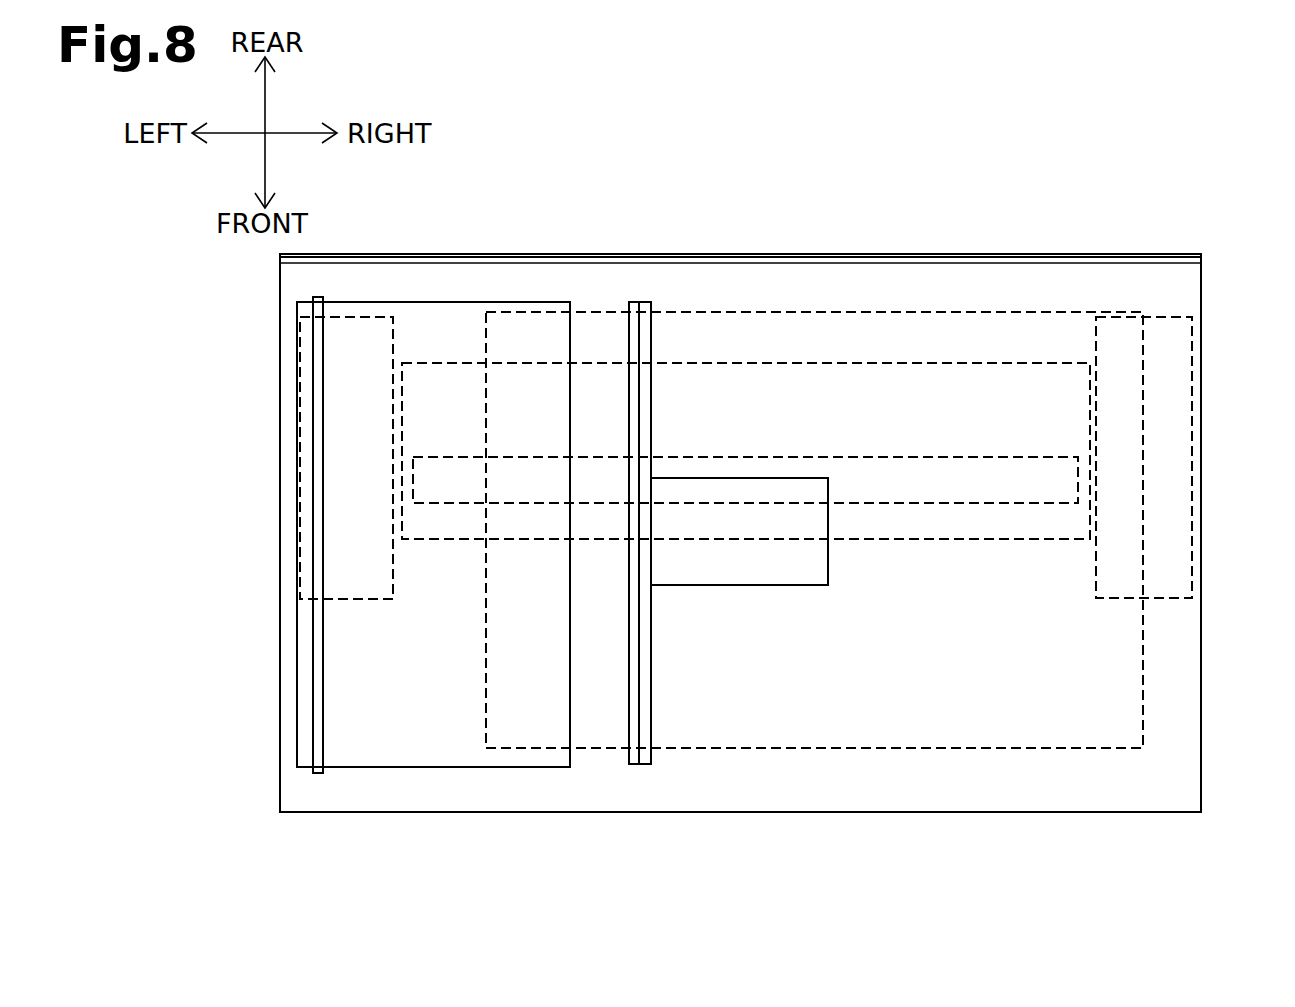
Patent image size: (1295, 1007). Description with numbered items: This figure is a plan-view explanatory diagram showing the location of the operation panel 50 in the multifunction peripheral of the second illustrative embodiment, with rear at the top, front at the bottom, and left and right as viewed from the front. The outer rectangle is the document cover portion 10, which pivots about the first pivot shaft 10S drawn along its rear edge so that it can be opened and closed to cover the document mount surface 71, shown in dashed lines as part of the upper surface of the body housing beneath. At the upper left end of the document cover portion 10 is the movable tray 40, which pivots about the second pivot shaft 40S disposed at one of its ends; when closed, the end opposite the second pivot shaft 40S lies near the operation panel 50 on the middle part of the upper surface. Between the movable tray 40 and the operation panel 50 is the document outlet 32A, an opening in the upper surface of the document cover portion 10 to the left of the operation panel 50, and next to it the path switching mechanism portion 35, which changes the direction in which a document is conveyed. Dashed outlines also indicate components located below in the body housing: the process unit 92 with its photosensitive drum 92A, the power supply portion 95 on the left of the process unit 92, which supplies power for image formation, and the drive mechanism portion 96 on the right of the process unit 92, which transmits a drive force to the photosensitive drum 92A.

The document cover portion 10 is at (1169, 297).
The first pivot shaft 10S is at (981, 260).
The movable tray 40 is at (438, 302).
The second pivot shaft 40S is at (318, 704).
The power supply portion 95 is at (359, 318).
The path switching mechanism portion 35 is at (648, 330).
The document outlet 32A is at (633, 349).
The operation panel 50 is at (721, 585).
The document mount surface 71 is at (867, 748).
The process unit 92 is at (967, 540).
The photosensitive drum 92A is at (922, 455).
The drive mechanism portion 96 is at (1193, 370).